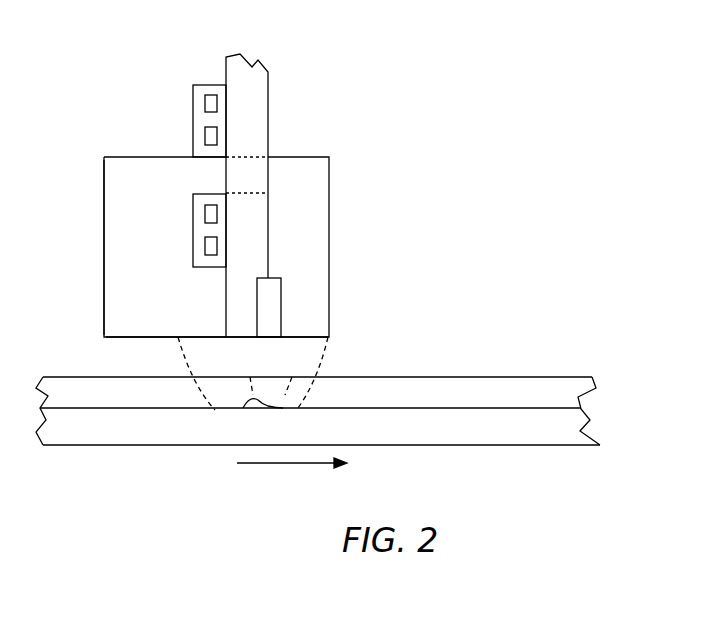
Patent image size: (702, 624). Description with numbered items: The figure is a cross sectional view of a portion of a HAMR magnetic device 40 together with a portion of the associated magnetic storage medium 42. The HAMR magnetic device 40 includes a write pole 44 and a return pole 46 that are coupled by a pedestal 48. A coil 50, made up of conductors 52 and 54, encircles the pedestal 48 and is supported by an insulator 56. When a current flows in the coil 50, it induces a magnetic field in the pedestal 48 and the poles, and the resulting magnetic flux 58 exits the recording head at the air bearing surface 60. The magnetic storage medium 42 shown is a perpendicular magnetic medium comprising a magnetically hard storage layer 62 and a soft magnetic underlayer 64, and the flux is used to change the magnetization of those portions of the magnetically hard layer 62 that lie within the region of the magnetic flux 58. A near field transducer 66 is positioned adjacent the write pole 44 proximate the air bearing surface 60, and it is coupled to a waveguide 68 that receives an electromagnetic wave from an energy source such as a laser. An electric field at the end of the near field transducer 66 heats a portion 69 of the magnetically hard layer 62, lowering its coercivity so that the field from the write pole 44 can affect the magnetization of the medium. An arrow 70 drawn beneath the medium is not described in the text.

The HAMR magnetic device 40 is at (430, 84).
The magnetic storage medium 42 is at (607, 349).
The write pole 44 is at (307, 200).
The return pole 46 is at (127, 277).
The pedestal 48 is at (252, 177).
The coil 50 is at (178, 72).
The conductor 52 is at (205, 247).
The conductor 54 is at (205, 135).
The insulator 56 is at (198, 88).
The magnetic flux 58 is at (323, 363).
The air bearing surface 60 is at (122, 338).
The magnetically hard storage layer 62 is at (552, 398).
The soft magnetic underlayer 64 is at (547, 423).
The near field transducer 66 is at (273, 300).
The waveguide 68 is at (245, 122).
The heated portion 69 is at (243, 406).
The web travel direction 70 is at (290, 463).